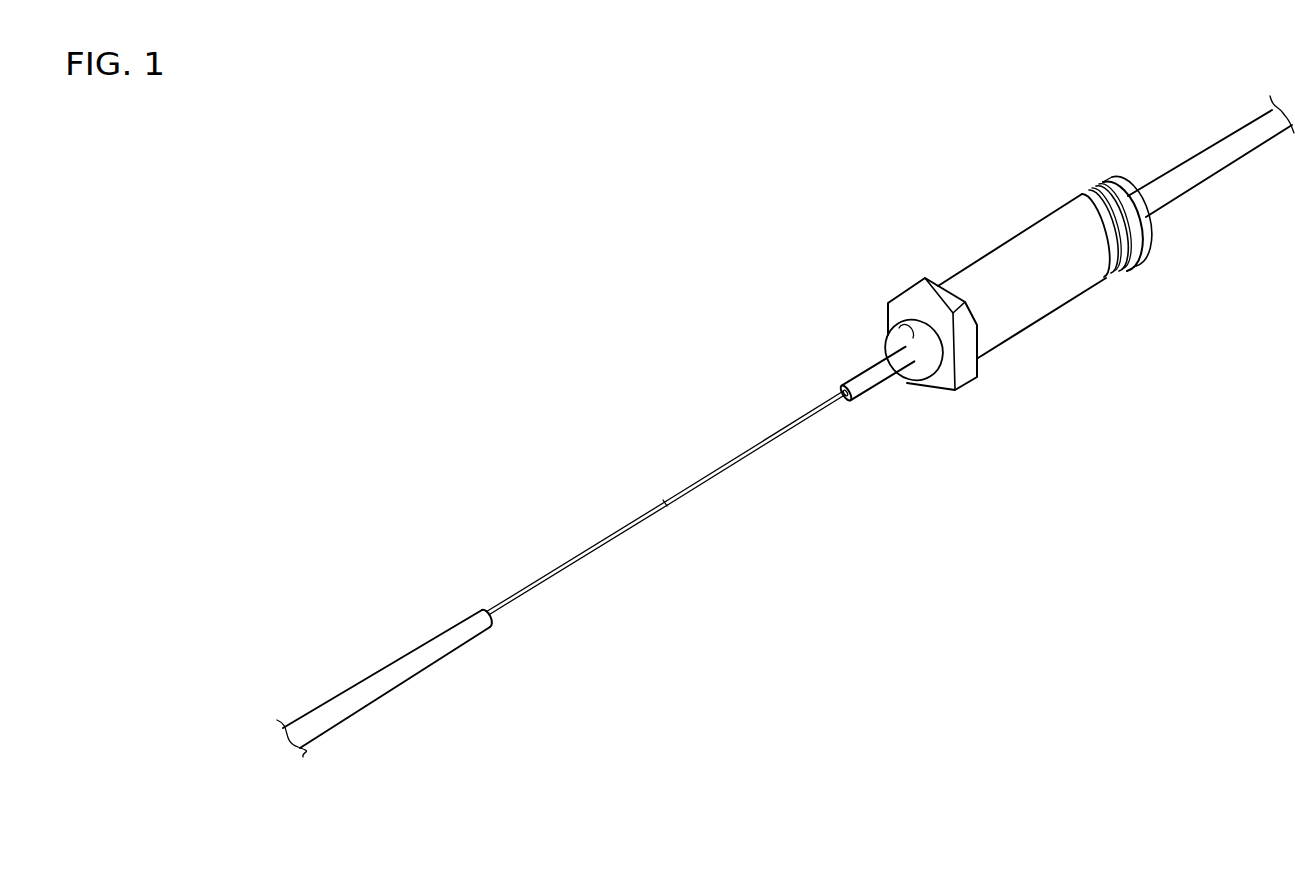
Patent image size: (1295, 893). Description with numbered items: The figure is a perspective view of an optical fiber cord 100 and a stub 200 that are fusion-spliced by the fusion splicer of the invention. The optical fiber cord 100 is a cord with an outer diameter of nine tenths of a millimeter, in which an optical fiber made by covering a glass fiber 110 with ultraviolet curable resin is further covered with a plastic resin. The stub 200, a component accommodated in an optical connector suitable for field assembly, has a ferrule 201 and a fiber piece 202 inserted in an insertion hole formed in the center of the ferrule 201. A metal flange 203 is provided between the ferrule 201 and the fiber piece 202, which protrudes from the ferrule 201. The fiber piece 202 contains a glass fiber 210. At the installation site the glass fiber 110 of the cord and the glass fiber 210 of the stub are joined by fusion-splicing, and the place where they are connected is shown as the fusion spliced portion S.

The optical fiber cord 100 is at (378, 668).
The glass fiber 110 is at (575, 558).
The fusion spliced portion S is at (665, 503).
The glass fiber 210 is at (765, 435).
The stub 200 is at (995, 237).
The ferrule 201 is at (1055, 292).
The fiber piece 202 is at (875, 377).
The metal flange 203 is at (967, 375).